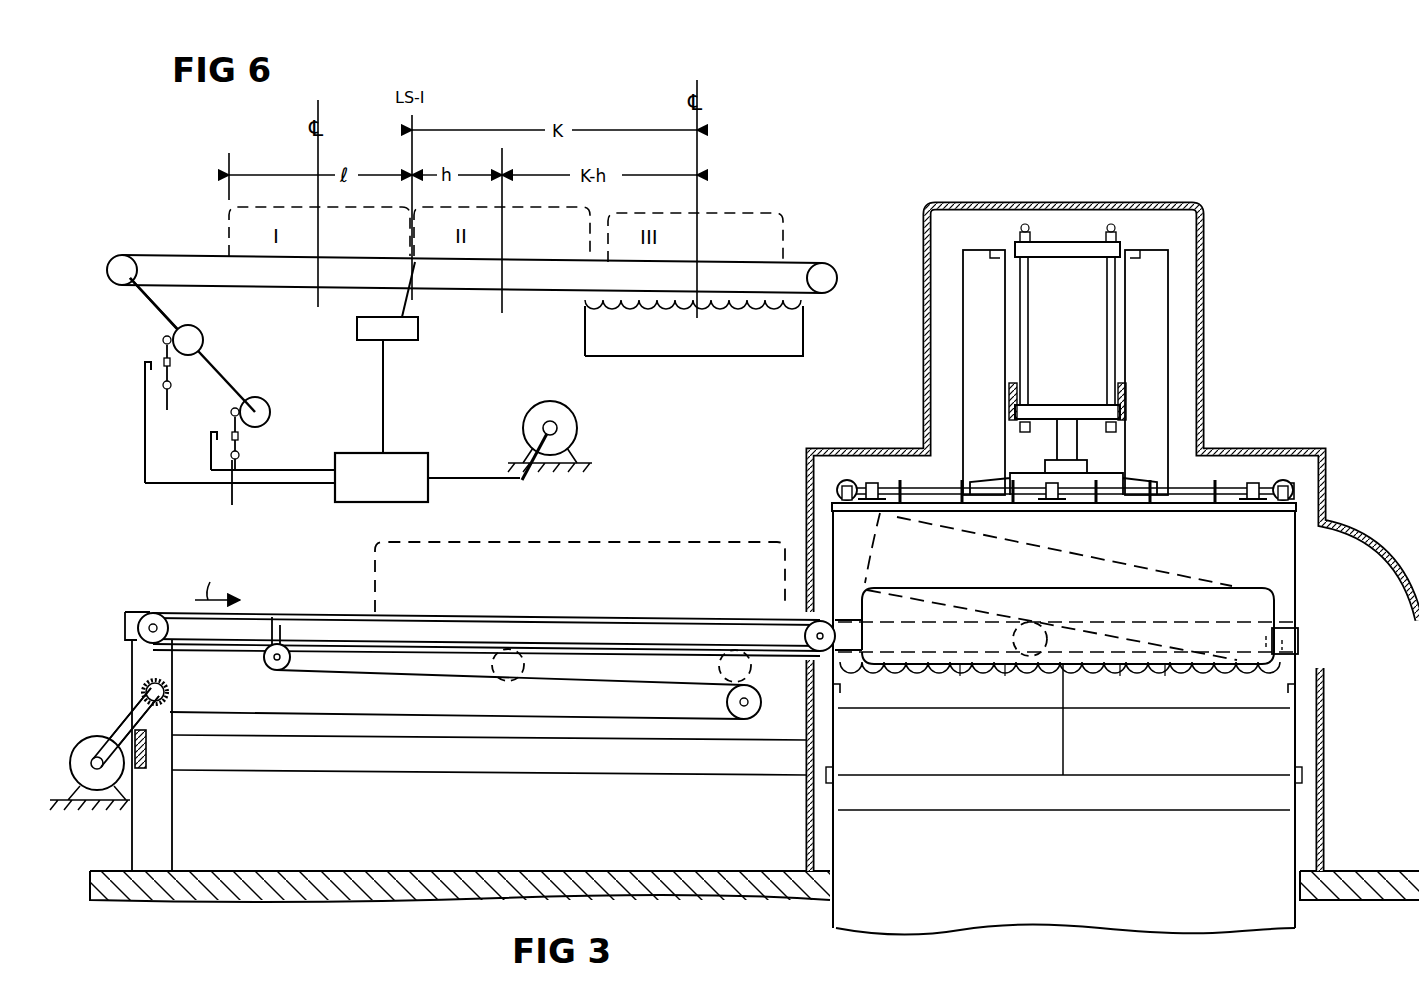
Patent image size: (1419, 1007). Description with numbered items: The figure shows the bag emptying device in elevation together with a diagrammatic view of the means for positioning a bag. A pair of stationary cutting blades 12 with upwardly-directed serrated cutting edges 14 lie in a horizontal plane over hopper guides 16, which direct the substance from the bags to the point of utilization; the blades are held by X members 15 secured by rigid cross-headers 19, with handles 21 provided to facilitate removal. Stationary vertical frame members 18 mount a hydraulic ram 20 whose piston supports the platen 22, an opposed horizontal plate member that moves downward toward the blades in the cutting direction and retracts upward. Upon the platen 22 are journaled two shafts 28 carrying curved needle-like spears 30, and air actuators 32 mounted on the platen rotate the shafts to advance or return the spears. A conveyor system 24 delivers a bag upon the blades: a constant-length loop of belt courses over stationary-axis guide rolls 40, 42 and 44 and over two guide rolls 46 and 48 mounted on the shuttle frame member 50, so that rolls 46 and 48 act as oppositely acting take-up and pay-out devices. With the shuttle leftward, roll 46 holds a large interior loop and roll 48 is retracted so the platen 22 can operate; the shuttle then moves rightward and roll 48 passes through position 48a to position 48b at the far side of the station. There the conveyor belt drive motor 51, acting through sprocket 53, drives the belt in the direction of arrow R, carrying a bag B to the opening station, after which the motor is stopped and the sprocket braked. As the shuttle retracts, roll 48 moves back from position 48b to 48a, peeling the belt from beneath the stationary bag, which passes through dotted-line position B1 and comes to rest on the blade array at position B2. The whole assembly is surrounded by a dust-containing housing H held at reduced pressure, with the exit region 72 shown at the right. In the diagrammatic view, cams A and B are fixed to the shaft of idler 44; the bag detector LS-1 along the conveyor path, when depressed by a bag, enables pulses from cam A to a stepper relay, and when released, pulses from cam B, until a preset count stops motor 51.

In FIG. 6, the cutting blades 12 is at (708, 348).
In FIG. 3, the cutting blades 12 is at (988, 728).
In FIG. 3, the serrated cutting edges 14 is at (942, 666).
In FIG. 3, the X members 15 is at (1047, 760).
In FIG. 3, the hopper guides 16 is at (1226, 922).
In FIG. 3, the vertical frame members 18 is at (975, 250).
In FIG. 3, the cross-headers 19 is at (836, 750).
In FIG. 3, the hydraulic ram 20 is at (1067, 352).
In FIG. 3, the handles 21 is at (838, 686).
In FIG. 3, the platen 22 is at (1205, 503).
In FIG. 3, the conveyor system 24 is at (773, 668).
In FIG. 3, the shafts 28 is at (933, 498).
In FIG. 3, the spears 30 is at (905, 488).
In FIG. 3, the air actuators 32 is at (838, 487).
In FIG. 3, the guide roll 40 is at (744, 706).
In FIG. 3, the guide roll 42 is at (170, 718).
In FIG. 6, the guide roll 44 is at (122, 256).
In FIG. 3, the guide roll 44 is at (148, 614).
In FIG. 3, the guide roll 46 is at (263, 660).
In FIG. 6, the guide roll 48 is at (822, 263).
In FIG. 3, the guide roll 48 is at (808, 626).
In FIG. 3, the intermediate position of roll 48 48a is at (1069, 626).
In FIG. 3, the extended position of roll 48 48b is at (1300, 627).
In FIG. 3, the shuttle frame member 50 is at (272, 617).
In FIG. 6, the conveyor belt drive motor 51 is at (573, 418).
In FIG. 3, the conveyor belt drive motor 51 is at (82, 746).
In FIG. 3, the sprocket 53 is at (143, 686).
In FIG. 3, the exit housing 72 is at (1362, 546).
In FIG. 3, the dust-containing housing H is at (1206, 340).
In FIG. 6, the cam A is at (181, 380).
In FIG. 6, the bag / cam B is at (250, 431).
In FIG. 3, the bag / cam B is at (638, 542).
In FIG. 3, the bag position B1 is at (1130, 564).
In FIG. 3, the bag position B2 is at (940, 590).
In FIG. 3, the direction of conveyor travel R is at (217, 577).
In FIG. 6, the bag detector LS-1 is at (387, 357).